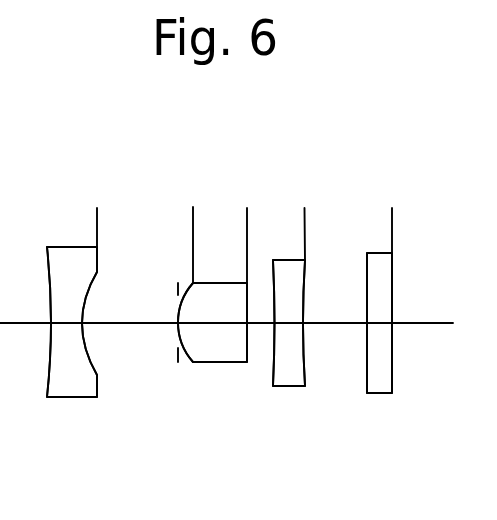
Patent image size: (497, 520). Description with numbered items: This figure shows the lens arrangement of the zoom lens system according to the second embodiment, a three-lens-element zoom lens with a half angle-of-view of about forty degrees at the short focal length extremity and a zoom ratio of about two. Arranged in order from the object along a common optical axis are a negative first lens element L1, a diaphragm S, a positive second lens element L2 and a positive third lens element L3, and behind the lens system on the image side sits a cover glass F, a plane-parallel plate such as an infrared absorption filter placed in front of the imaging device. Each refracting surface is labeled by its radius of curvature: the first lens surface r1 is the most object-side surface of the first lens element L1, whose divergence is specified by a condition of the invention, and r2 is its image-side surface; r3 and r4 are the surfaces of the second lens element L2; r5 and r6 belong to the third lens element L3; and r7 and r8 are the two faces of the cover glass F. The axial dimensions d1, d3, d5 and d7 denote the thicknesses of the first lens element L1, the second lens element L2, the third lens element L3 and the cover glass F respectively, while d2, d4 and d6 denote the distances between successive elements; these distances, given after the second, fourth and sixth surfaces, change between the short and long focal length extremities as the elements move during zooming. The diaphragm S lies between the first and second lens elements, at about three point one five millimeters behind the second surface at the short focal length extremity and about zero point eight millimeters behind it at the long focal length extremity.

The negative first lens element L1 is at (78, 265).
The positive second lens element L2 is at (207, 288).
The positive third lens element L3 is at (285, 283).
The diaphragm S is at (177, 283).
The cover glass F is at (382, 275).
The first lens surface r1 is at (47, 247).
The radius of curvature r2 is at (97, 208).
The radius of curvature r3 is at (193, 207).
The radius of curvature r4 is at (247, 208).
The radius of curvature r5 is at (273, 260).
The radius of curvature r6 is at (304, 208).
The radius of curvature r7 is at (367, 253).
The radius of curvature r8 is at (392, 208).
The lens-element thickness d1 is at (67, 323).
The distance between lens elements d2 is at (129, 323).
The lens-element thickness d3 is at (213, 323).
The distance between lens elements d4 is at (261, 323).
The lens-element thickness d5 is at (289, 323).
The distance between lens elements d6 is at (337, 323).
The lens-element thickness d7 is at (381, 323).